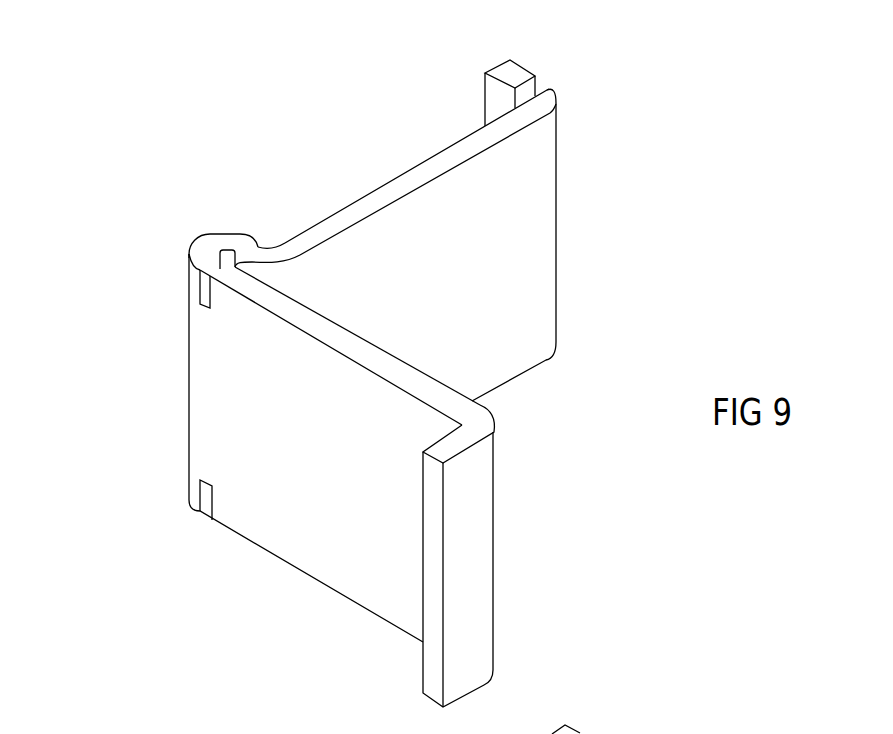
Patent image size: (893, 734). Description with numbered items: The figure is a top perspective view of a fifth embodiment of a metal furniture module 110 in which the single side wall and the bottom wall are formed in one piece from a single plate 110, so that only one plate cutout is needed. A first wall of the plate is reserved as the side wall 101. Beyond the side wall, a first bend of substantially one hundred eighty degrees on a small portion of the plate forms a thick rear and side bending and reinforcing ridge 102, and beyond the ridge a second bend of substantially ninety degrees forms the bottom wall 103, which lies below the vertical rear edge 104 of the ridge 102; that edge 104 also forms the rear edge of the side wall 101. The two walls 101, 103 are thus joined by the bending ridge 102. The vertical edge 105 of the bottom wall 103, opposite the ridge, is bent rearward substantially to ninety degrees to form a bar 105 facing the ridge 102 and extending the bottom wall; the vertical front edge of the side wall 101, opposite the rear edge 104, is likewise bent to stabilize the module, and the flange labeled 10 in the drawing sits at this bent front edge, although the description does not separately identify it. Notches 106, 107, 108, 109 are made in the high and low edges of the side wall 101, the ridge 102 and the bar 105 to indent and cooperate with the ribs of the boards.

The flange 10 is at (460, 645).
The side wall 101 is at (262, 402).
The bending and reinforcing ridge 102 is at (238, 236).
The bottom wall 103 is at (498, 246).
The vertical rear edge 104 is at (197, 240).
The bar 105 is at (540, 100).
The notch 106 is at (198, 272).
The notch 107 is at (260, 243).
The notch 108 is at (205, 515).
The notch 109 is at (525, 72).
The module 110 is at (540, 408).